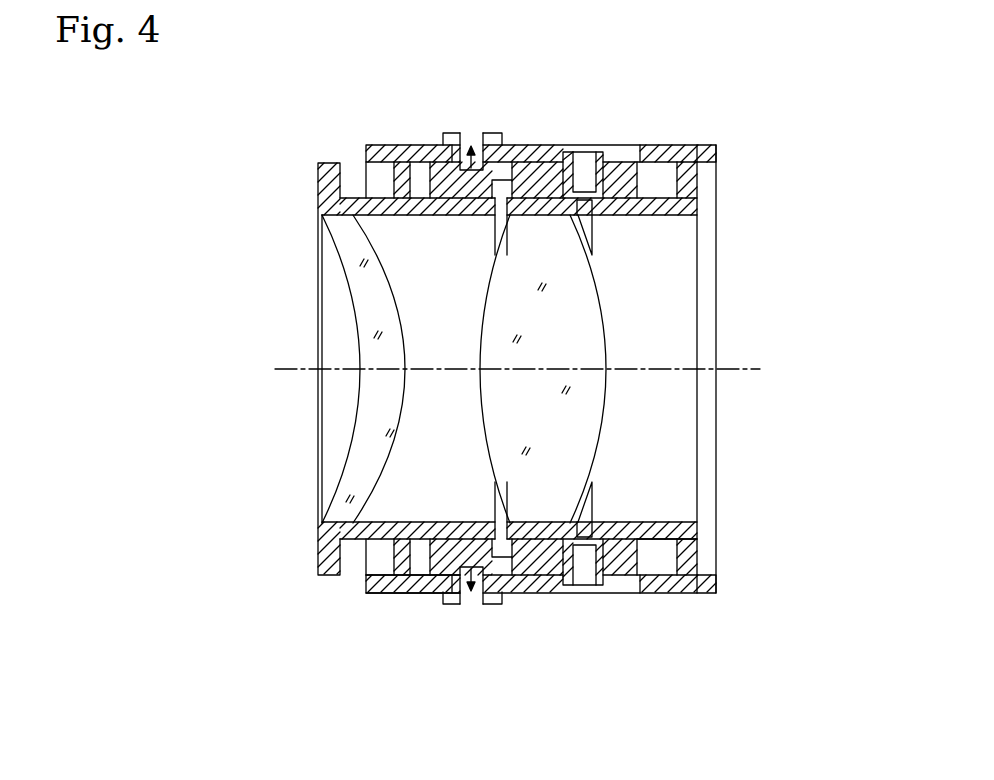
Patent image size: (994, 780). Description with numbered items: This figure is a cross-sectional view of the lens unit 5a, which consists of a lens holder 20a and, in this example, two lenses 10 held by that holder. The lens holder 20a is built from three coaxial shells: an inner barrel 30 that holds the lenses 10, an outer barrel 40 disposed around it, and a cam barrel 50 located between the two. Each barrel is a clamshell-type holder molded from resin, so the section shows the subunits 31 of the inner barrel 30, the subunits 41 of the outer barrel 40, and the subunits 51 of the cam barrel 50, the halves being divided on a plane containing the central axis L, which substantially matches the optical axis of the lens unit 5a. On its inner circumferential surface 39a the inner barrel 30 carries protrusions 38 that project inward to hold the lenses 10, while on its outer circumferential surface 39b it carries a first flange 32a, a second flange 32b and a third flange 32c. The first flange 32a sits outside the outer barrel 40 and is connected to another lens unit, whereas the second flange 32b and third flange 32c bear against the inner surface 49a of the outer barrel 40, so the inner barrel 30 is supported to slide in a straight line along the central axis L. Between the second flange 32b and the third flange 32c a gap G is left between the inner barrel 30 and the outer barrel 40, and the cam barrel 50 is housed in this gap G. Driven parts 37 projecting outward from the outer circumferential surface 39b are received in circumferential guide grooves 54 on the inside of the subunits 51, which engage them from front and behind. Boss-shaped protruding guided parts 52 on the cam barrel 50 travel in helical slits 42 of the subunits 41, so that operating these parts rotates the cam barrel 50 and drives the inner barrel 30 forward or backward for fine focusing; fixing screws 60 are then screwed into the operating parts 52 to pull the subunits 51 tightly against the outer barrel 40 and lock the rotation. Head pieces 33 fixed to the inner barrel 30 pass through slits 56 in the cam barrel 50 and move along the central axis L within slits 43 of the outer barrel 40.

The lens unit 5a is at (692, 122).
The lens 10 is at (388, 412).
The lens holder 20a is at (386, 597).
The inner barrel 30 is at (637, 214).
The subunit of inner barrel 31 is at (688, 240).
The first flange 32a is at (323, 162).
The second flange 32b is at (392, 168).
The third flange 32c is at (702, 148).
The head piece 33 is at (593, 172).
The driven part 37 is at (505, 205).
The protrusion 38 is at (322, 518).
The inner circumferential surface 39a is at (668, 540).
The outer circumferential surface 39b is at (682, 552).
The outer barrel 40 is at (412, 150).
The subunit of outer barrel 41 is at (722, 152).
The helical slit 42 is at (488, 145).
The slit 43 is at (658, 170).
The inner surface 49a is at (367, 168).
The cam barrel 50 is at (533, 162).
The subunit of cam barrel 51 is at (436, 213).
The protruding guided part 52 is at (456, 148).
The guide groove 54 is at (478, 215).
The slit 56 is at (585, 185).
The fixing screw 60 is at (471, 133).
The gap G is at (690, 166).
The central axis L is at (763, 354).